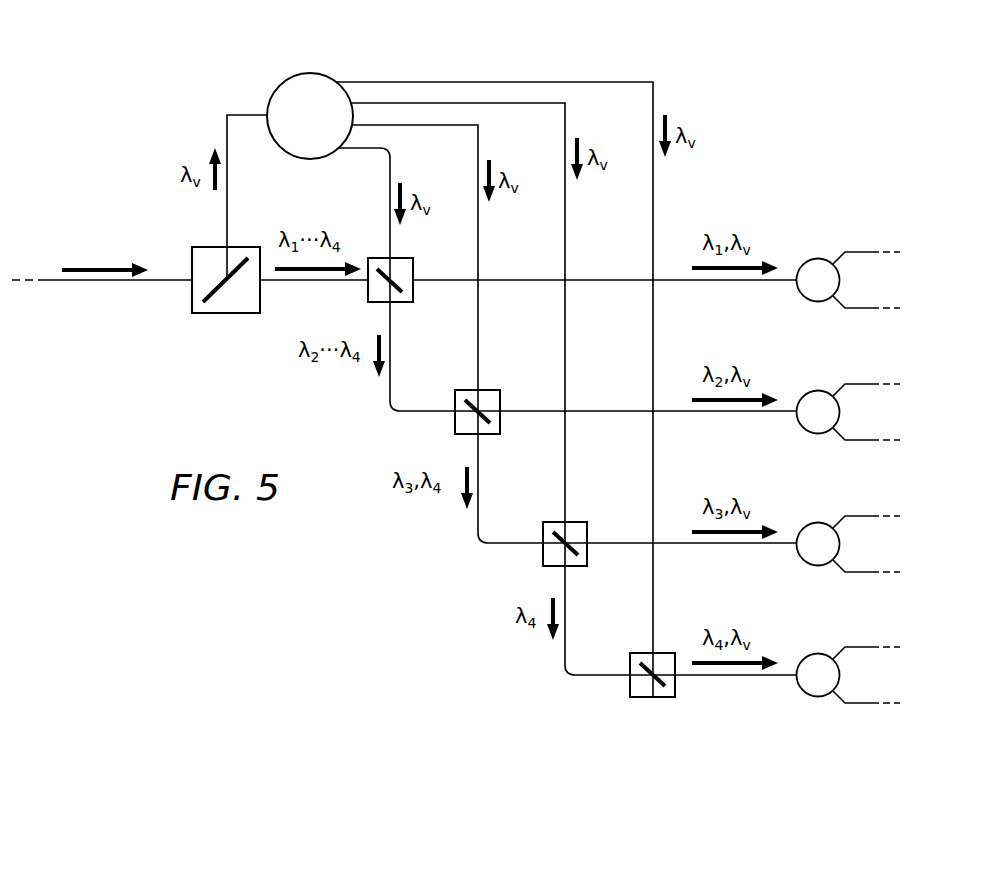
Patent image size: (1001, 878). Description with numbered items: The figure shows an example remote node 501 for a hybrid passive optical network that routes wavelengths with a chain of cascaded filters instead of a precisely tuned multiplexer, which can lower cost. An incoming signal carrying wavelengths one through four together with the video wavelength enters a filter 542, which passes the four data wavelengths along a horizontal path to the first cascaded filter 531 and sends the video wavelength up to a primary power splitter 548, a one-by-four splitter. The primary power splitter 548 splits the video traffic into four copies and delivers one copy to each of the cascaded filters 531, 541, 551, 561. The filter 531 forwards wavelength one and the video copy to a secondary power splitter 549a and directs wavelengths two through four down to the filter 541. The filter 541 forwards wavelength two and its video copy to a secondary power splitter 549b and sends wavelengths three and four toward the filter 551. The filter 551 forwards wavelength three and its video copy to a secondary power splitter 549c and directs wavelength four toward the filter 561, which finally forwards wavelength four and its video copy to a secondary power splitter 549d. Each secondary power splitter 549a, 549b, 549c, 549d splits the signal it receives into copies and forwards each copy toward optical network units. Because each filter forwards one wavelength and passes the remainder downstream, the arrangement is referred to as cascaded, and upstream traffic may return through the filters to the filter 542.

The remote node 501 is at (88, 104).
The primary power splitter 548 is at (307, 72).
The filter 542 is at (227, 313).
The filter 531 is at (400, 302).
The filter 541 is at (488, 434).
The filter 551 is at (577, 566).
The filter 561 is at (658, 697).
The secondary power splitter 549a is at (819, 258).
The secondary power splitter 549b is at (819, 390).
The secondary power splitter 549c is at (817, 566).
The secondary power splitter 549d is at (817, 697).